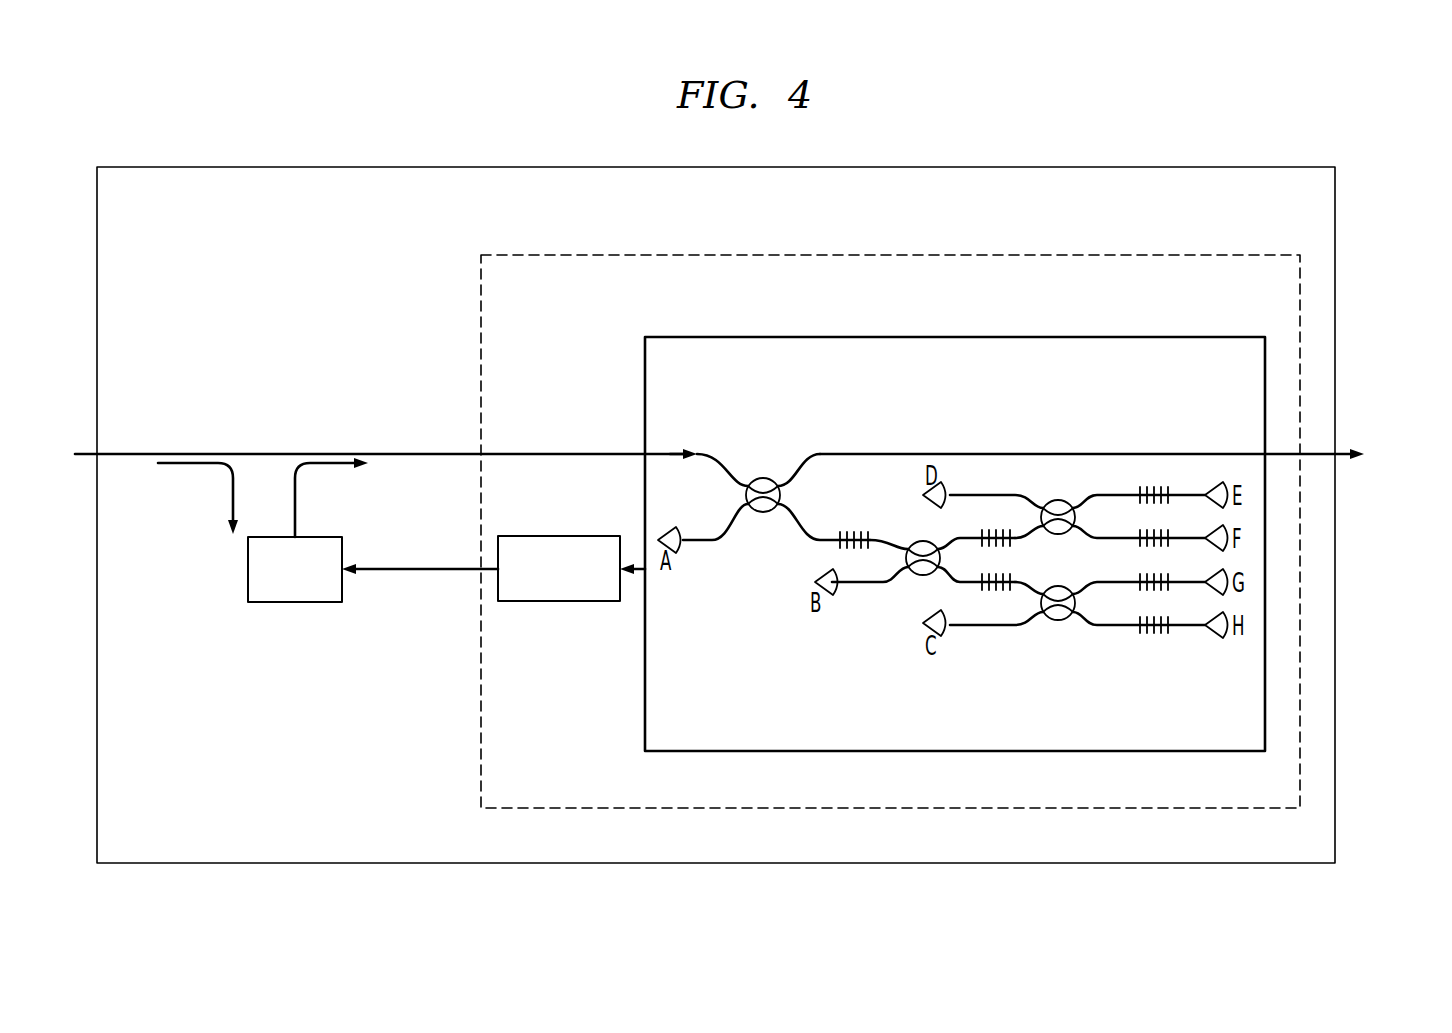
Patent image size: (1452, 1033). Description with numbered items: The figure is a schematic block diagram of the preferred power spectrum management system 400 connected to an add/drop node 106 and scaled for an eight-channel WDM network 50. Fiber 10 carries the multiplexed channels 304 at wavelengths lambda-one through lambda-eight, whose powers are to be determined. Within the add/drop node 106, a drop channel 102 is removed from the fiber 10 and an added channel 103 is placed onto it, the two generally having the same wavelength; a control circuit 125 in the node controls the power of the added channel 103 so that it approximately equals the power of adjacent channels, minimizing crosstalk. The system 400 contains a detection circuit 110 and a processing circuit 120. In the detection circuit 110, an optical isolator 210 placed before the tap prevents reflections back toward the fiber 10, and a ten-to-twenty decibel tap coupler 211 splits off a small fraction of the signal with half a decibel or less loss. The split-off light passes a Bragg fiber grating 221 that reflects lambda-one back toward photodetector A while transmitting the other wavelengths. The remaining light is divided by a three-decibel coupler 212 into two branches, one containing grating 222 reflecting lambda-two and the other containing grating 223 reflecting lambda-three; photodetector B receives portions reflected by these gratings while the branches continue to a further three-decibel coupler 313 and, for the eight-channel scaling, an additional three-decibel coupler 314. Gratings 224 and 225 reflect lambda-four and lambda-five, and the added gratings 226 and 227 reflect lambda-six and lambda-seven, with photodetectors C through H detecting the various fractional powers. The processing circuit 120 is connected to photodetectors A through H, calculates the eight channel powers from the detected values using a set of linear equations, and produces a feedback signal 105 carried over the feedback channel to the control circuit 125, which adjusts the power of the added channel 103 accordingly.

The add/drop node 106 is at (716, 489).
The fiber 10 is at (719, 418).
The WDM network 50 is at (1407, 447).
The channels 304 is at (286, 410).
The drop channel 102 is at (191, 520).
The added channel 103 is at (372, 494).
The control circuit 125 is at (295, 592).
The feedback signal 105 is at (493, 612).
The processing circuit 120 is at (559, 546).
The power spectrum management system 400 is at (890, 505).
The detection circuit 110 is at (955, 519).
The optical isolator 210 is at (673, 407).
The 10–20 dB coupler 211 is at (776, 450).
The 3 dB coupler 212 is at (918, 505).
The Bragg fiber grating 221 is at (858, 530).
The grating 222 is at (995, 523).
The grating 223 is at (1000, 600).
The 3 dB coupler 313 is at (1060, 500).
The 3 dB coupler 314 is at (1077, 645).
The grating 224 is at (1165, 485).
The grating 225 is at (1168, 527).
The grating 226 is at (1168, 588).
The grating 227 is at (1150, 637).